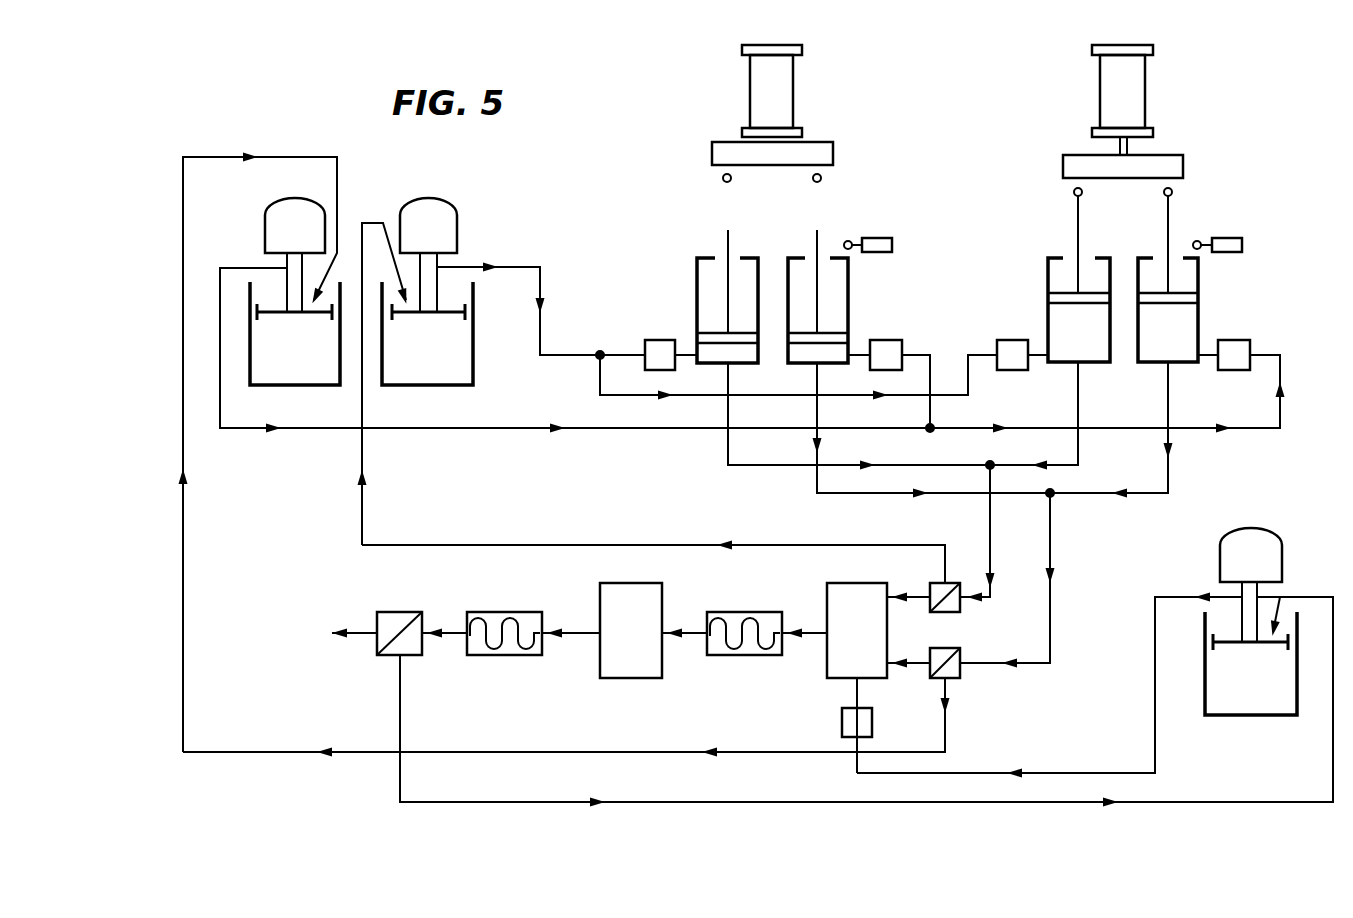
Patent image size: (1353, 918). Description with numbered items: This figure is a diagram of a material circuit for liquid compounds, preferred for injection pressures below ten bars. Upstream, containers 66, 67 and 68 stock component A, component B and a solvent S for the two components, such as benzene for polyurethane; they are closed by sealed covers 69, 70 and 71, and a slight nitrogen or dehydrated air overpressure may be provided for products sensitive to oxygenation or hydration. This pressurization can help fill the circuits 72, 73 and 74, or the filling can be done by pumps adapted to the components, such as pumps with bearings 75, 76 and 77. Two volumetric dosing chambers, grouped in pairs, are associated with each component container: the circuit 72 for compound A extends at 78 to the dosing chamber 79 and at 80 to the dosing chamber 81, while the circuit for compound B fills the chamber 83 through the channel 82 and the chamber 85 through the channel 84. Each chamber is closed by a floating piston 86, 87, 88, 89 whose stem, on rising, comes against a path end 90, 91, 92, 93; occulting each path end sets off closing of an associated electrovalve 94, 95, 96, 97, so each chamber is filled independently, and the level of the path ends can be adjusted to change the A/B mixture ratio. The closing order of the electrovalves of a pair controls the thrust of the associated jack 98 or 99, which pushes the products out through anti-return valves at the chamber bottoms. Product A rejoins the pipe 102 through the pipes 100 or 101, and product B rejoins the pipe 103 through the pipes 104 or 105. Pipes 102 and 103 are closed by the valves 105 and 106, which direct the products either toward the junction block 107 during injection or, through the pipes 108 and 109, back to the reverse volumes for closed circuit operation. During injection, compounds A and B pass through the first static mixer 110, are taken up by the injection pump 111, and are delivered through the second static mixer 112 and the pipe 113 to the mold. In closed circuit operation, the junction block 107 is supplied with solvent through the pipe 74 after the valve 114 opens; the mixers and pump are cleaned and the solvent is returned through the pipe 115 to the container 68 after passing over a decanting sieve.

The container for component A 66 is at (266, 382).
The container for component B 67 is at (402, 382).
The container for solvent S 68 is at (1240, 715).
The sealed cover 69 is at (280, 316).
The sealed cover 70 is at (442, 316).
The sealed cover 71 is at (1220, 649).
The circuit for compound A 72 is at (249, 430).
The circuit for compound B 73 is at (513, 266).
The solvent circuit pipe 74 is at (1124, 772).
The pump with bearings 75 is at (280, 204).
The pump with bearings 76 is at (451, 209).
The pump with bearings 77 is at (1274, 548).
The circuit extension to dosing chamber 78 is at (1114, 427).
The dosing chamber 79 is at (1200, 322).
The circuit extension to dosing chamber 80 is at (938, 364).
The dosing chamber 81 is at (850, 295).
The channel 82 is at (618, 352).
The dosing chamber 83 is at (695, 278).
The channel 84 is at (594, 396).
The dosing chamber 85 is at (1040, 276).
The floating piston 86 is at (1196, 292).
The floating piston 87 is at (1058, 295).
The floating piston 88 is at (838, 332).
The floating piston 89 is at (703, 332).
The path end 90 is at (1173, 193).
The path end 91 is at (1074, 192).
The path end 92 is at (822, 178).
The path end 93 is at (722, 180).
The electrovalve 94 is at (1256, 348).
The electrovalve 95 is at (1008, 343).
The electrovalve 96 is at (904, 346).
The electrovalve 97 is at (651, 346).
The jack 98 is at (1144, 100).
The jack 99 is at (792, 106).
The pipe 100 is at (842, 494).
The pipe 101 is at (1170, 464).
The pipe 102 is at (1054, 536).
The pipe 103 is at (989, 516).
The pipe 104 is at (760, 468).
The pipe / valve 105 is at (1076, 412).
The valve 106 is at (963, 678).
The junction block 107 is at (834, 590).
The return pipe 108 is at (502, 545).
The return pipe 109 is at (518, 750).
The first static mixer 110 is at (738, 612).
The injection pump 111 is at (616, 638).
The second static mixer 112 is at (504, 613).
The pipe to mold 113 is at (347, 628).
The valve 114 is at (844, 721).
The solvent return pipe 115 is at (696, 804).